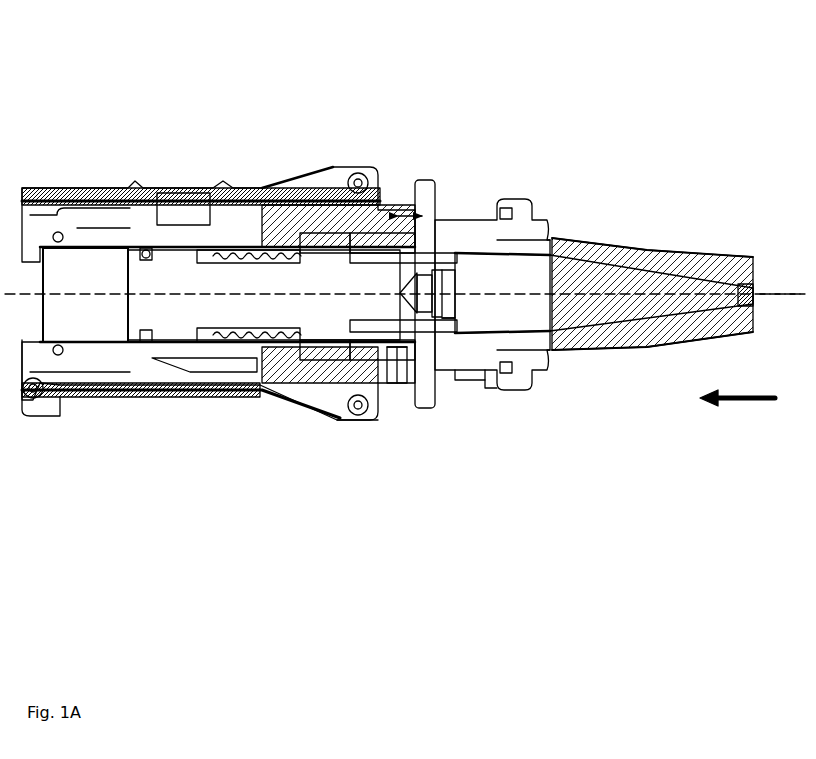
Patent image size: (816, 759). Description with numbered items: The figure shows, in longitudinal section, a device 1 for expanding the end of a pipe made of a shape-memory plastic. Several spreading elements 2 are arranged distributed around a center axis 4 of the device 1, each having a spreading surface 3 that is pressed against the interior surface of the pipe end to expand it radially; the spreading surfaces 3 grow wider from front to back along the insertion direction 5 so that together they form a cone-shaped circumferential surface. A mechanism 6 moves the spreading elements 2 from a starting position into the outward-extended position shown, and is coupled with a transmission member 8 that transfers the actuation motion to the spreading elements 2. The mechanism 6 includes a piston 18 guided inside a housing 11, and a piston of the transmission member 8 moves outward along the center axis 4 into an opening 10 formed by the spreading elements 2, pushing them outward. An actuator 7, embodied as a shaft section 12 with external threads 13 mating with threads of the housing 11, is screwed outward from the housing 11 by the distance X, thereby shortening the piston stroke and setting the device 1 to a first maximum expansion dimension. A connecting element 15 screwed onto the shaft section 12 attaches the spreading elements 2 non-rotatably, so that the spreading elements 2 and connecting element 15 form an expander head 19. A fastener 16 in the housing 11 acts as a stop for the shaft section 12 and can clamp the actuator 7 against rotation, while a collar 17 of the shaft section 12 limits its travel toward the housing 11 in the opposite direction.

The device 1 is at (385, 123).
The spreading elements 2 is at (700, 272).
The spreading surface 3 is at (677, 250).
The center axis 4 is at (777, 290).
The insertion direction 5 is at (732, 400).
The mechanism 6 is at (208, 166).
The actuator 7 is at (428, 213).
The transmission member 8 is at (448, 332).
The opening 10 is at (610, 280).
The housing 11 is at (300, 235).
The shaft section 12 is at (455, 205).
The external threads 13 is at (355, 245).
The connecting element 15 is at (493, 390).
The fastener 16 is at (378, 420).
The collar 17 is at (407, 357).
The piston 18 is at (185, 305).
The expander head 19 is at (541, 206).